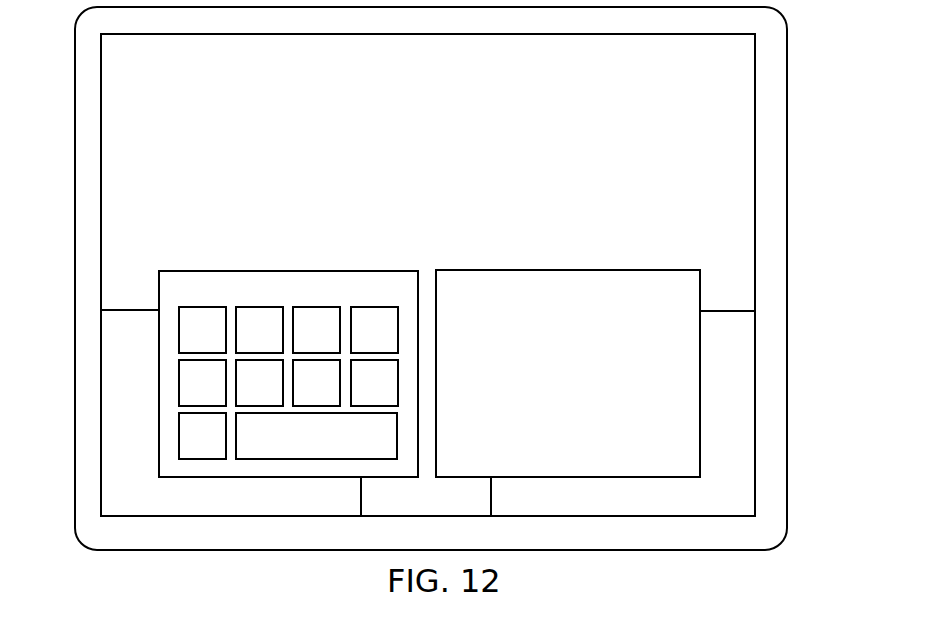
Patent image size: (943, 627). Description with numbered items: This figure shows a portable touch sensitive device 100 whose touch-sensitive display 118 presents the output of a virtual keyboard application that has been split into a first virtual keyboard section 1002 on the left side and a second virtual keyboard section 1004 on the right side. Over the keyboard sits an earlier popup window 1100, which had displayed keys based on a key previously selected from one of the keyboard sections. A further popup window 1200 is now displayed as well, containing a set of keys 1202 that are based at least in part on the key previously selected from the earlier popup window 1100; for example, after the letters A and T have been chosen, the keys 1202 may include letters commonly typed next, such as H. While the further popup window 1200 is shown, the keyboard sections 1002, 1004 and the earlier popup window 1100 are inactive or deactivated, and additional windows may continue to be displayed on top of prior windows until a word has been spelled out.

The touch sensitive device 100 is at (860, 203).
The touch-sensitive display 118 is at (540, 34).
The first virtual keyboard section 1002 is at (115, 335).
The second virtual keyboard section 1004 is at (708, 335).
The popup window 1200 is at (337, 285).
The set of keys 1202 is at (179, 325).
The popup window 1100 is at (575, 283).